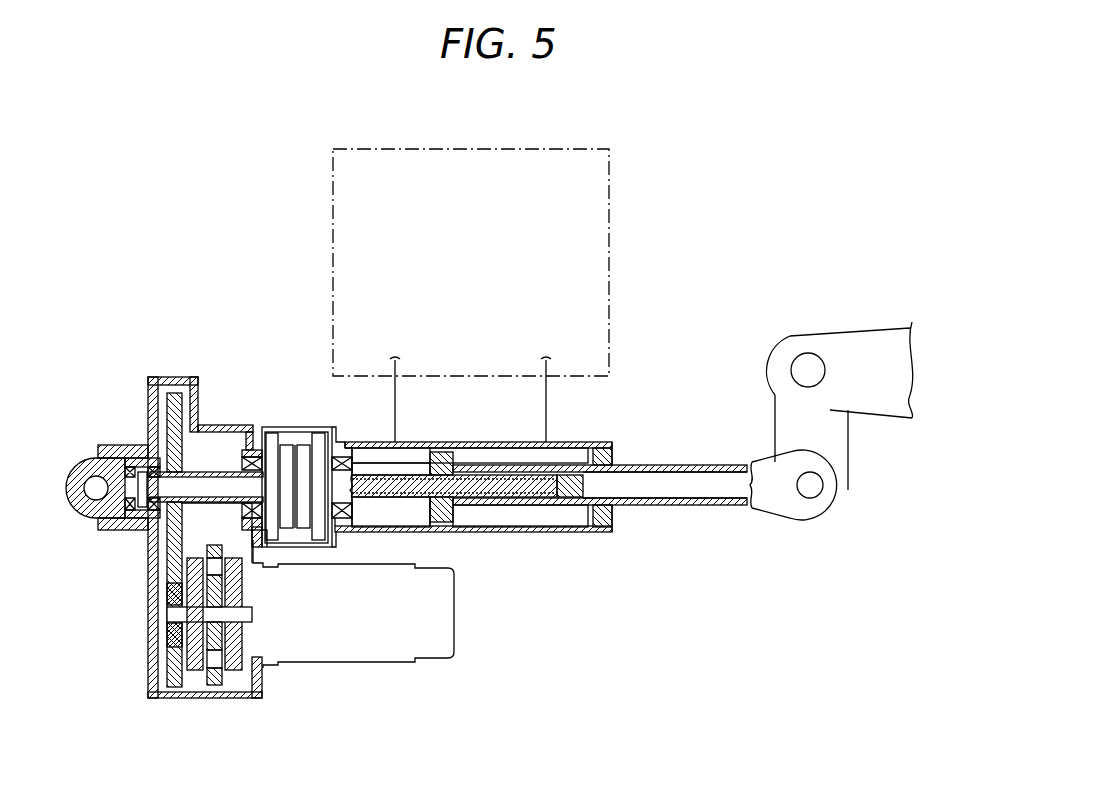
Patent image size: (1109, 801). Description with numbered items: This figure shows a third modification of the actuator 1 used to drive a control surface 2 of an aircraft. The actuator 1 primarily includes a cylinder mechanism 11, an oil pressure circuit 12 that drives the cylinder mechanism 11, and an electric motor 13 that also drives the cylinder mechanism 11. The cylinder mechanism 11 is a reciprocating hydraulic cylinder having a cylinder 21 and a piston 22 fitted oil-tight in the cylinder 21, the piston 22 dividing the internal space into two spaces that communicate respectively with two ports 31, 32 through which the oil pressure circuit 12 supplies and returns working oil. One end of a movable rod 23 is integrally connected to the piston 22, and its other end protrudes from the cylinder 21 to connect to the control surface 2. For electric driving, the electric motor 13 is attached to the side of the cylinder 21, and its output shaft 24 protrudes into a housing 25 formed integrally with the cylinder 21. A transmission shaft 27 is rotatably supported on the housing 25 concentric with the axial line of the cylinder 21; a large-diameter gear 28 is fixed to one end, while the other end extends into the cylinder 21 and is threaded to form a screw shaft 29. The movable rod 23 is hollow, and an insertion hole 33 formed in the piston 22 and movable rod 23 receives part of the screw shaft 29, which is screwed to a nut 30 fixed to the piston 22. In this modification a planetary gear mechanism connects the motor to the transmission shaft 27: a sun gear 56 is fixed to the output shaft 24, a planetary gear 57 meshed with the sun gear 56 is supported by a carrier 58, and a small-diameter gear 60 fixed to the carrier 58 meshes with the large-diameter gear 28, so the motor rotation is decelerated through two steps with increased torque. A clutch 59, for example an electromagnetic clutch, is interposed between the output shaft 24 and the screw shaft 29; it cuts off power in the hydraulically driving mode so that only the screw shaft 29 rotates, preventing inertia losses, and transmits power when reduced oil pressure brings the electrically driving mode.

The actuator 1 is at (800, 196).
The control surface 2 is at (878, 330).
The cylinder mechanism 11 is at (638, 550).
The oil pressure circuit 12 is at (609, 264).
The electric motor 13 is at (445, 598).
The cylinder 21 is at (511, 535).
The piston 22 is at (448, 455).
The movable rod 23 is at (650, 465).
The output shaft 24 is at (255, 675).
The housing 25 is at (148, 550).
The transmission shaft 27 is at (230, 485).
The large-diameter gear 28 is at (170, 430).
The screw shaft 29 is at (556, 490).
The nut 30 is at (407, 475).
The port 31 is at (377, 440).
The port 32 is at (546, 445).
The insertion hole 33 is at (692, 500).
The sun gear 56 is at (242, 590).
The planetary gear 57 is at (205, 682).
The carrier 58 is at (188, 663).
The clutch 59 is at (297, 422).
The small-diameter gear 60 is at (170, 634).